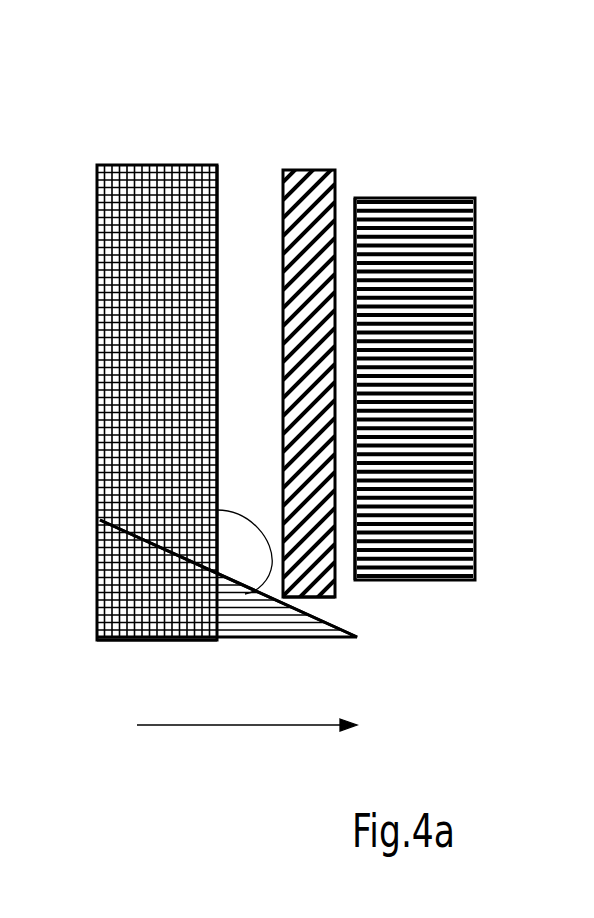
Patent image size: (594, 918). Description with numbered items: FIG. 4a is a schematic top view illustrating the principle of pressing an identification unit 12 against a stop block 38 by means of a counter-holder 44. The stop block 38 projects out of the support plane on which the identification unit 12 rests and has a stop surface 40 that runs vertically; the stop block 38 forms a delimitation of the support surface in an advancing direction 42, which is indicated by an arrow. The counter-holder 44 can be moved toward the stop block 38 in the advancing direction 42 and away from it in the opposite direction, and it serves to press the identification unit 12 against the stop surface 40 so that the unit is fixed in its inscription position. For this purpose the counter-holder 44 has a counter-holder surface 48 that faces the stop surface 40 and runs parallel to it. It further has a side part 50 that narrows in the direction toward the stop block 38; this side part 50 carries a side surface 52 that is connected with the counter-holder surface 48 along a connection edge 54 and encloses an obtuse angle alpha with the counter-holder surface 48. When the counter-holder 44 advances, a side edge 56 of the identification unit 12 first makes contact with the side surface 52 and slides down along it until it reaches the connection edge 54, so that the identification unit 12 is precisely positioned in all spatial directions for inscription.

The identification unit 12 is at (309, 182).
The stop block 38 is at (426, 210).
The stop surface 40 is at (355, 245).
The advancing direction 42 is at (255, 727).
The counter-holder 44 is at (152, 178).
The counter-holder surface 48 is at (228, 190).
The side part 50 is at (143, 612).
The side surface 52 is at (335, 622).
The connection edge 54 is at (244, 628).
The side edge 56 is at (295, 608).
The obtuse angle alpha is at (246, 548).